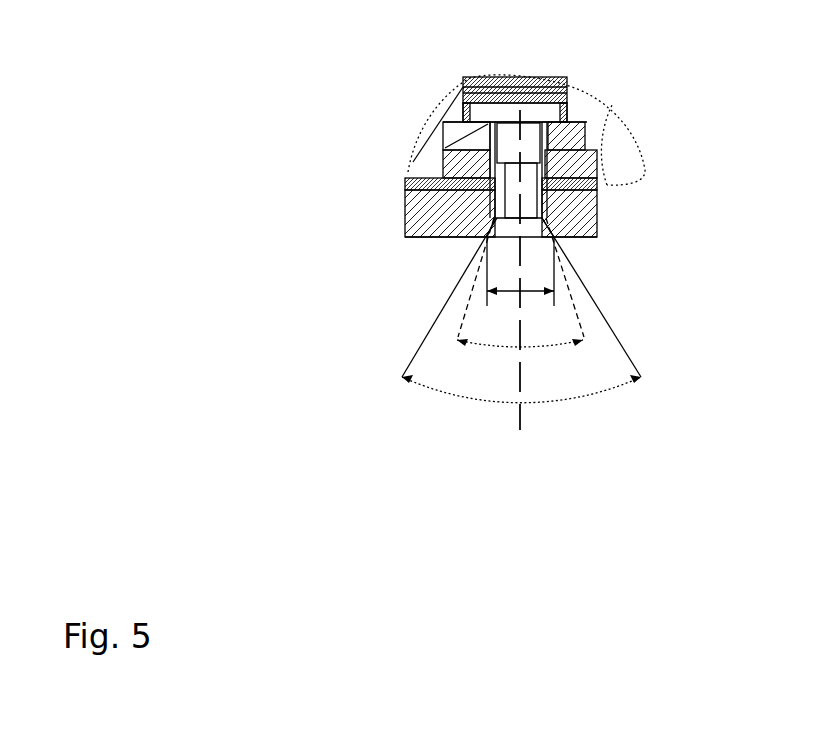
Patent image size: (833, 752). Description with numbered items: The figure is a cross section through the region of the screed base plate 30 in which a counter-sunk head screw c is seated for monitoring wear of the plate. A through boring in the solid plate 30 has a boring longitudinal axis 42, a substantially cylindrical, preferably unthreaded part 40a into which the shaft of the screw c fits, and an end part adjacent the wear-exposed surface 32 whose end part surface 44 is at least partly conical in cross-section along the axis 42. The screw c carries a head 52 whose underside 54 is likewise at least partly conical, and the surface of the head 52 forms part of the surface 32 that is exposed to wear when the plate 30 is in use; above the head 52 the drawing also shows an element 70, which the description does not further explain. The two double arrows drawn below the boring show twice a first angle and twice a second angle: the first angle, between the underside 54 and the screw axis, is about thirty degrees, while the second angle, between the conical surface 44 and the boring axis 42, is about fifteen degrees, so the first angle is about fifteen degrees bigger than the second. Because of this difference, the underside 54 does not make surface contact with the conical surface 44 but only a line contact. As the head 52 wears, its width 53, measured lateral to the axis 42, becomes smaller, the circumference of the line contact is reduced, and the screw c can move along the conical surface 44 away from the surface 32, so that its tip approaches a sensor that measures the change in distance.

The cap 70 is at (463, 92).
The counter-sunk head screw c is at (593, 177).
The underside 54 is at (590, 142).
The cylindrical part 40a is at (404, 187).
The screed base plate 30 is at (580, 223).
The end part surface 44 is at (556, 239).
The surface 32 is at (418, 248).
The width 53 is at (525, 294).
The head 52 is at (484, 272).
The boring longitudinal axis 42 is at (529, 411).